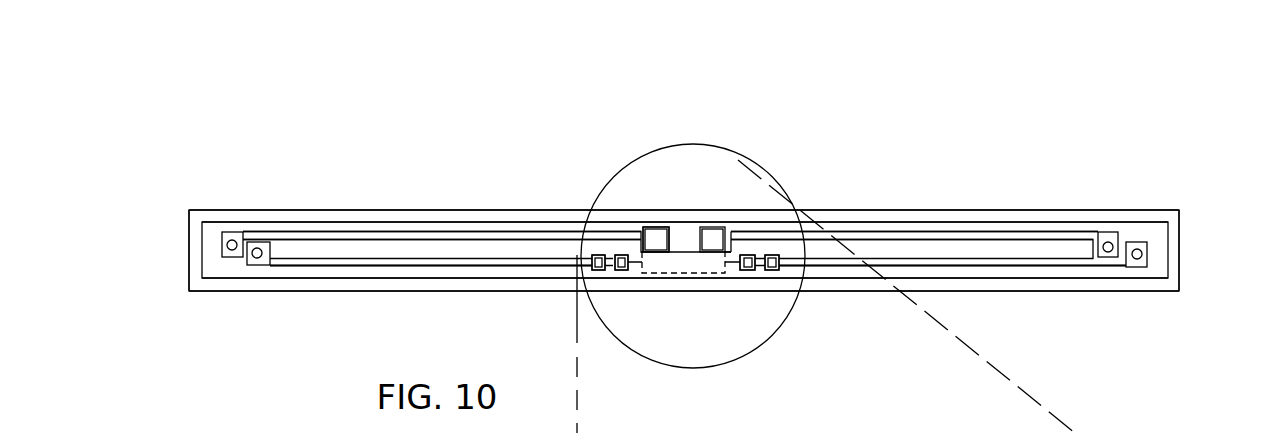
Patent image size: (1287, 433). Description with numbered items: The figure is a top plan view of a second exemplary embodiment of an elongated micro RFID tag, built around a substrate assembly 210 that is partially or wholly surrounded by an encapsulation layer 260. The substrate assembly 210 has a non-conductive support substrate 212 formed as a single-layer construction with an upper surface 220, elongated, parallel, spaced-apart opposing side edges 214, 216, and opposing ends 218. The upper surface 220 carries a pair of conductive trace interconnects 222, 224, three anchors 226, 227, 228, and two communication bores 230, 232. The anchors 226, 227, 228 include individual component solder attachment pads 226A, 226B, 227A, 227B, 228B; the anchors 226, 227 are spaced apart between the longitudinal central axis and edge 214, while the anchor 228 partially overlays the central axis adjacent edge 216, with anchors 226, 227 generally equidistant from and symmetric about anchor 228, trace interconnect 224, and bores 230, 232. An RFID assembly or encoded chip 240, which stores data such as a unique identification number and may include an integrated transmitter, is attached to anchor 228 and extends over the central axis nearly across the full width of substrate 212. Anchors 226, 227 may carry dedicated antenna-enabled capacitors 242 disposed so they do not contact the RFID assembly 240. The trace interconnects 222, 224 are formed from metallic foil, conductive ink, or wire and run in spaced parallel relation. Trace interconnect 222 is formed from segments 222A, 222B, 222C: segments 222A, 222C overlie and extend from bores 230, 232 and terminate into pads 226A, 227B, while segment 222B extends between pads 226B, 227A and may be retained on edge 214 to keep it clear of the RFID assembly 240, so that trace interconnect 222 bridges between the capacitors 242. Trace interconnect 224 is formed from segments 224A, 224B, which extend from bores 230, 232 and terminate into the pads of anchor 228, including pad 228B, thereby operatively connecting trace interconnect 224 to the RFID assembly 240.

The substrate assembly 210 is at (363, 218).
The non-conductive support substrate 212 is at (1077, 276).
The side edge 214 is at (393, 282).
The side edge 216 is at (472, 222).
The opposing ends 218 is at (198, 258).
The upper surface 220 is at (208, 268).
The trace interconnect 222 is at (445, 270).
The trace interconnect segment 222A is at (993, 267).
The trace interconnect segment 222B is at (674, 274).
The trace interconnect segment 222C is at (332, 267).
The trace interconnect 224 is at (614, 223).
The trace interconnect segment 224A is at (1015, 232).
The trace interconnect segment 224B is at (594, 224).
The anchor 226 is at (771, 248).
The component solder attachment pad 226A is at (779, 264).
The component solder attachment pad 226B is at (748, 271).
The anchor 227 is at (594, 251).
The component solder attachment pad 227A is at (626, 272).
The component solder attachment pad 227B is at (591, 264).
The anchor 228 is at (658, 238).
The component solder attachment pad 228B is at (664, 226).
The communication bore 230 is at (1132, 259).
The communication bore 232 is at (260, 249).
The RFID assembly 240 is at (683, 252).
The antenna-enabled capacitors 242 is at (621, 272).
The encapsulation layer 260 is at (924, 207).